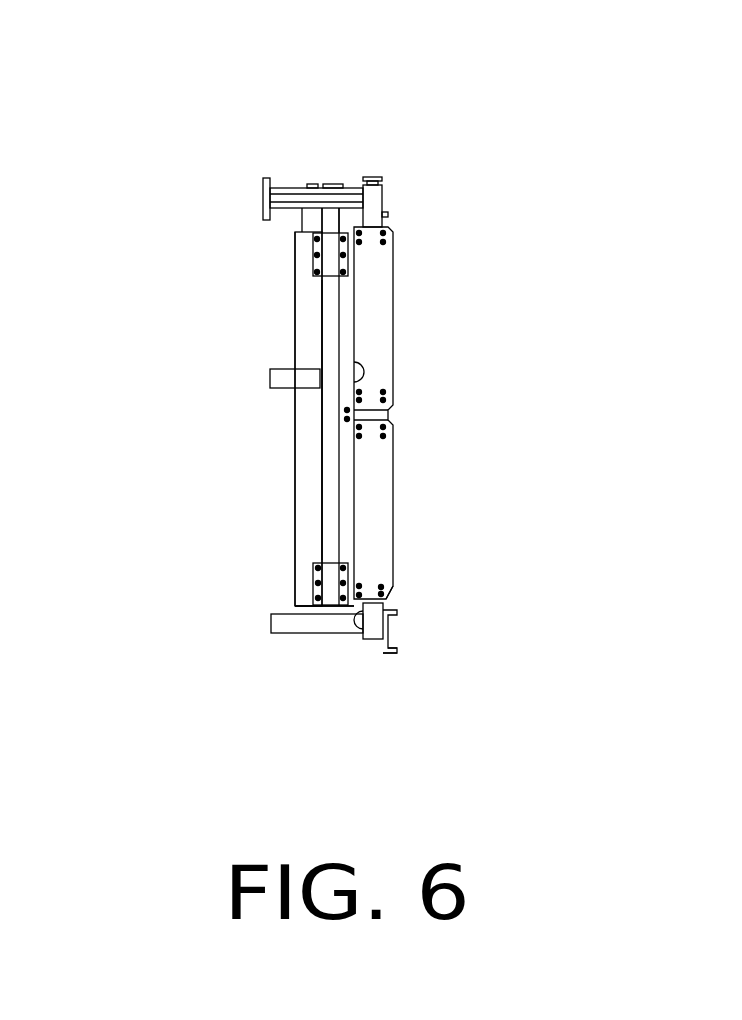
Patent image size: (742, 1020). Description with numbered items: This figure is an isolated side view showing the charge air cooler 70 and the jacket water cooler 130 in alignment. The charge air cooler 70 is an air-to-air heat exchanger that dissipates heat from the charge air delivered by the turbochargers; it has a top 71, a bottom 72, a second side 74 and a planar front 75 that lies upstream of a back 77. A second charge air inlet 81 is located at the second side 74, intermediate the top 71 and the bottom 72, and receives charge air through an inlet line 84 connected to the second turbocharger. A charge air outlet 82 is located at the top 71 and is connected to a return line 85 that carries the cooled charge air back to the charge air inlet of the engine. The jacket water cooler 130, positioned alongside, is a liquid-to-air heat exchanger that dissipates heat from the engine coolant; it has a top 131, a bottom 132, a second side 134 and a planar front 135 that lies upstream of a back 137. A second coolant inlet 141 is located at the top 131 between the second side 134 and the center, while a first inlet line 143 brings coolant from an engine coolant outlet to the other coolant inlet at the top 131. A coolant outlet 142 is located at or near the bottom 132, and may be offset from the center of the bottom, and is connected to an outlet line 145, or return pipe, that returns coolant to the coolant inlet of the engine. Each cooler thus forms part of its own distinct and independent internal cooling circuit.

The charge air cooler 70 is at (271, 280).
The top 71 is at (317, 236).
The bottom 72 is at (313, 608).
The second side 74 is at (327, 487).
The front 75 is at (295, 447).
The back 77 is at (363, 374).
The second charge air inlet 81 is at (322, 370).
The charge air outlet 82 is at (344, 236).
The inlet line 84 is at (270, 380).
The return line 85 is at (295, 188).
The jacket water cooler 130 is at (406, 191).
The top 131 is at (387, 223).
The bottom 132 is at (373, 643).
The second side 134 is at (385, 618).
The front 135 is at (354, 629).
The back 137 is at (387, 632).
The second coolant inlet 141 is at (350, 188).
The coolant outlet 142 is at (393, 582).
The first inlet line 143 is at (280, 198).
The outlet line 145 is at (272, 624).